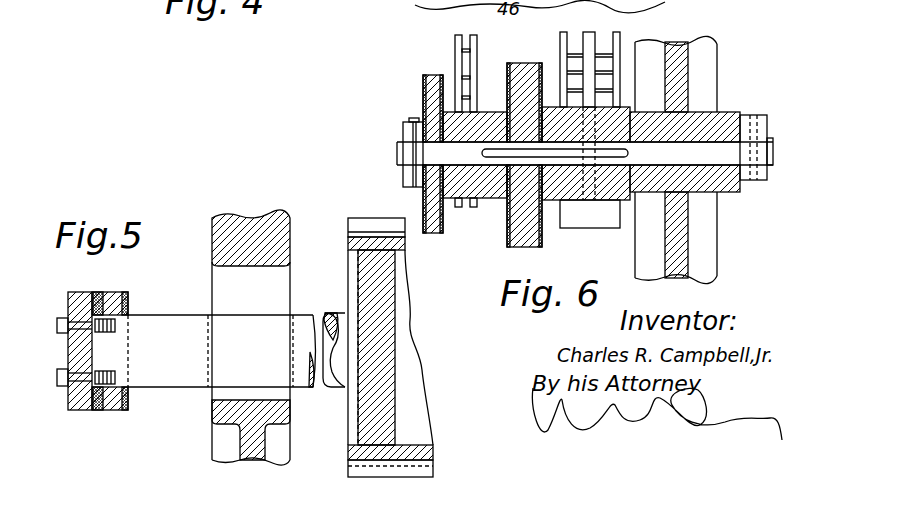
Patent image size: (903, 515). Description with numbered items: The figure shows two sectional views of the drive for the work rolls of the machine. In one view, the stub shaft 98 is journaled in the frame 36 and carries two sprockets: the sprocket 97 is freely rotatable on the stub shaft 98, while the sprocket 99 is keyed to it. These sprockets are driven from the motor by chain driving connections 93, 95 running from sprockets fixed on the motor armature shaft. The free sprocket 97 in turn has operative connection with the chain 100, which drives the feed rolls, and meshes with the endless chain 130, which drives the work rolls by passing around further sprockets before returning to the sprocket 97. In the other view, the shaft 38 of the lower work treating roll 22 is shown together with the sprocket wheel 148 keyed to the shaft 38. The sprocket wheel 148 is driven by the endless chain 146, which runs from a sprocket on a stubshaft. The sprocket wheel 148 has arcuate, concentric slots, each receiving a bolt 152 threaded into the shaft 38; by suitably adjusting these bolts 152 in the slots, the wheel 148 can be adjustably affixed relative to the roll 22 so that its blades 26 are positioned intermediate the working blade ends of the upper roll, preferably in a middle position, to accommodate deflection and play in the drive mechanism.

In FIG. 5, the lower work treating roll 22 is at (348, 270).
In FIG. 5, the blades 26 is at (379, 200).
In FIG. 5, the frame 36 is at (258, 216).
In FIG. 6, the frame 36 is at (705, 65).
In FIG. 5, the shaft 38 is at (158, 314).
In FIG. 6, the chain driving connection 93 is at (421, 174).
In FIG. 6, the chain driving connection 95 is at (507, 242).
In FIG. 6, the sprocket 97 is at (423, 94).
In FIG. 6, the stub shaft 98 is at (397, 160).
In FIG. 6, the sprocket 99 is at (496, 200).
In FIG. 6, the chain 100 is at (477, 50).
In FIG. 6, the endless chain 130 is at (610, 32).
In FIG. 5, the endless chain 146 is at (100, 292).
In FIG. 5, the sprocket wheel 148 is at (108, 411).
In FIG. 5, the bolt 152 is at (57, 378).